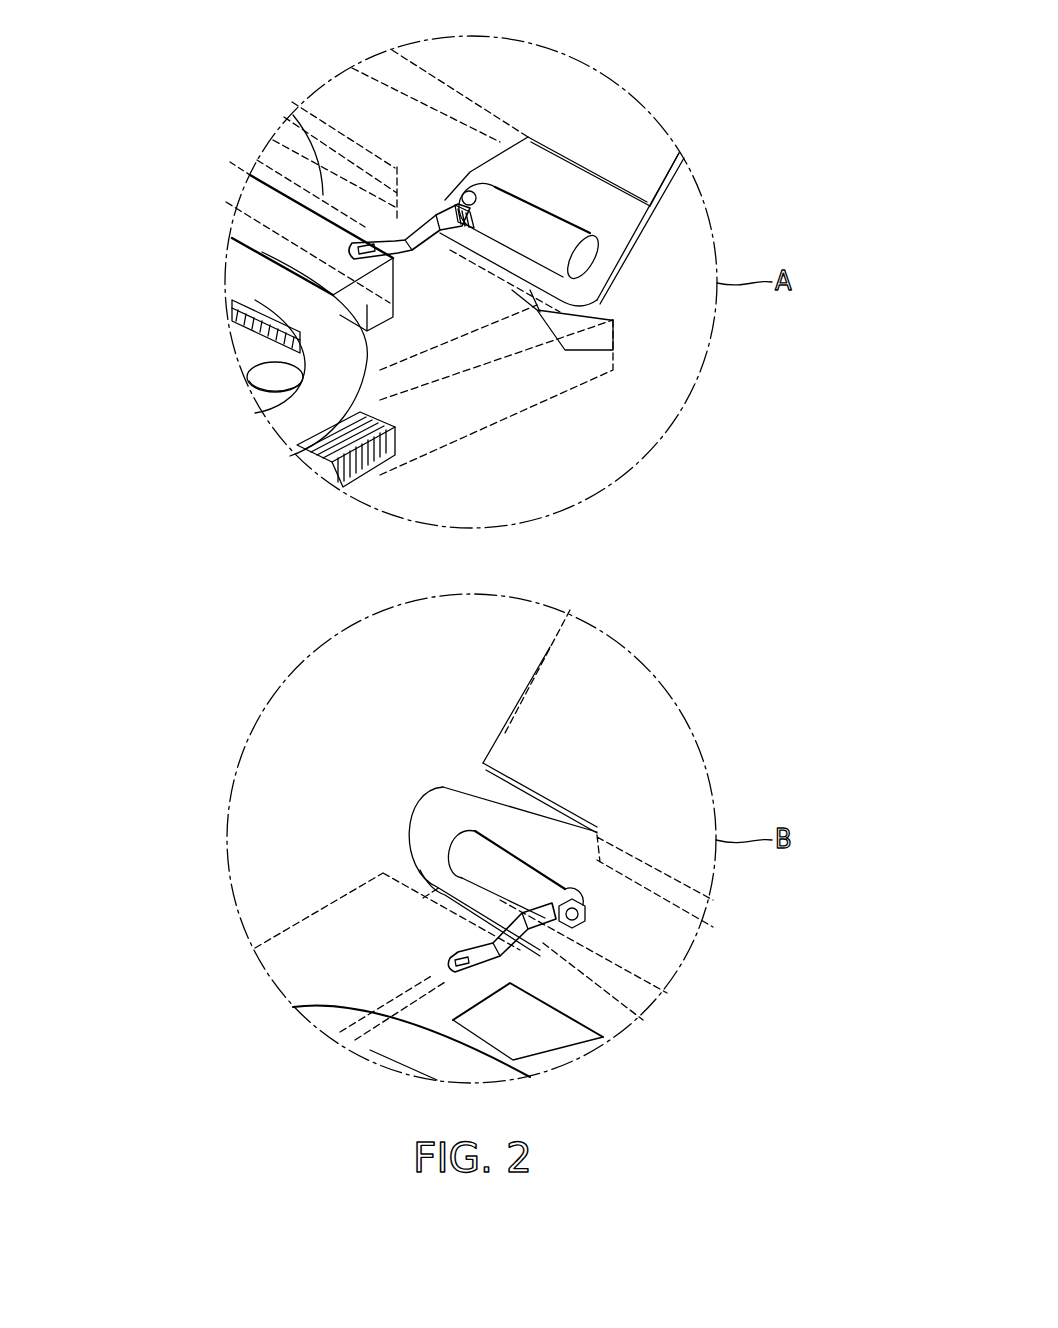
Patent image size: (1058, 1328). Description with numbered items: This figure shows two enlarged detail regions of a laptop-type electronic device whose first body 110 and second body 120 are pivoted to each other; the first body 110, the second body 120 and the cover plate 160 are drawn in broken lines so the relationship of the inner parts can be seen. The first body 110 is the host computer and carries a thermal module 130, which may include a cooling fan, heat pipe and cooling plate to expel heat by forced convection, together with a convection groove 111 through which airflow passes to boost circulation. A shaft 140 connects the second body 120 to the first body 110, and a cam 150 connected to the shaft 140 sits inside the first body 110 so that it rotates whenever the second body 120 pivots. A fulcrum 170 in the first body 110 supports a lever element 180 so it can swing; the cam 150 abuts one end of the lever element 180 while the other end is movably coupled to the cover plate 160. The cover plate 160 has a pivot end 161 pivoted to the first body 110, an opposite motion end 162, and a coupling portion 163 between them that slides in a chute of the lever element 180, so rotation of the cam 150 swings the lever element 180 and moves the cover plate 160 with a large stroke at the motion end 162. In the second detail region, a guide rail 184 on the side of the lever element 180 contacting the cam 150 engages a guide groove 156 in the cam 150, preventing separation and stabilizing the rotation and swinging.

The first body 110 is at (458, 446).
The convection groove 111 is at (348, 265).
The second body 120 is at (658, 219).
The thermal module 130 is at (393, 466).
The shaft 140 is at (557, 237).
The cam 150 is at (470, 192).
The guide groove 156 is at (572, 885).
The cover plate 160 is at (352, 270).
The pivot end 161 is at (262, 322).
The motion end 162 is at (397, 218).
The coupling portion 163 is at (385, 262).
The fulcrum 170 is at (540, 362).
The lever element 180 is at (430, 201).
The guide rail 184 is at (560, 900).